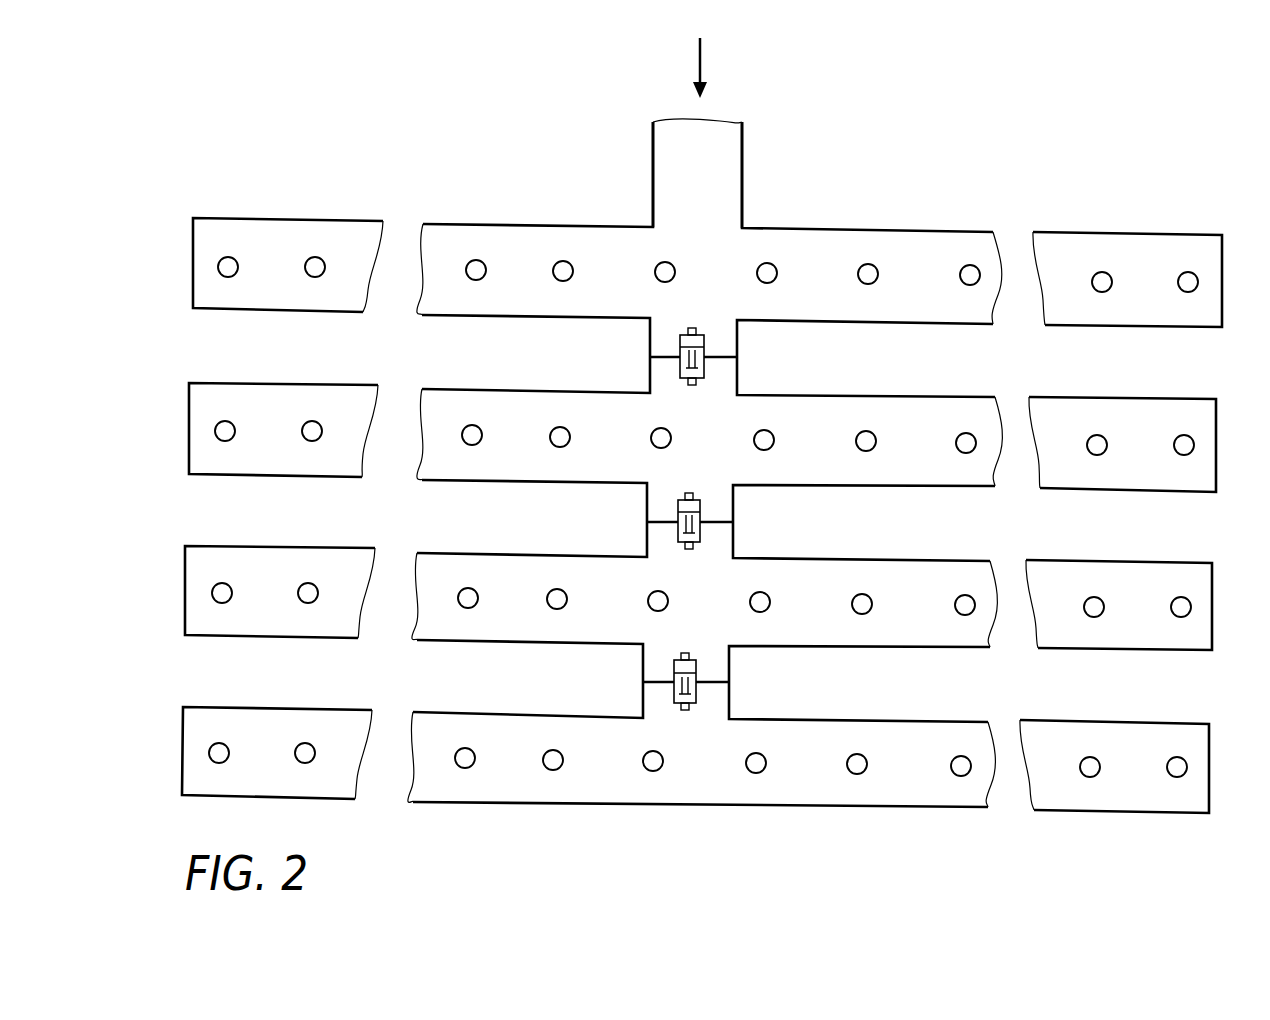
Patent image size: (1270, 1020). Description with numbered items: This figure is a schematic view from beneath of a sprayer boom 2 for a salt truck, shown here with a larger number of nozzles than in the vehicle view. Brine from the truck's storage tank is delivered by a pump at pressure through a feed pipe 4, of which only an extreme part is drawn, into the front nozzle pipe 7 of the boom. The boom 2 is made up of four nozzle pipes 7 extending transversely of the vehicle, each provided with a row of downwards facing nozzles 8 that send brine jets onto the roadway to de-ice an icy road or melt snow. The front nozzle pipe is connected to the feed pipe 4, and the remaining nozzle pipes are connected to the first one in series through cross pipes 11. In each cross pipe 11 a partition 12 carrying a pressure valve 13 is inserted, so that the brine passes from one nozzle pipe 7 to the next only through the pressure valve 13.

The sprayer boom 2 is at (869, 213).
The feed pipe 4 is at (750, 200).
The nozzle pipe 7 is at (1151, 215).
The nozzle 8 is at (1192, 282).
The cross pipe 11 is at (738, 350).
The partition 12 is at (723, 526).
The pressure valve 13 is at (677, 533).